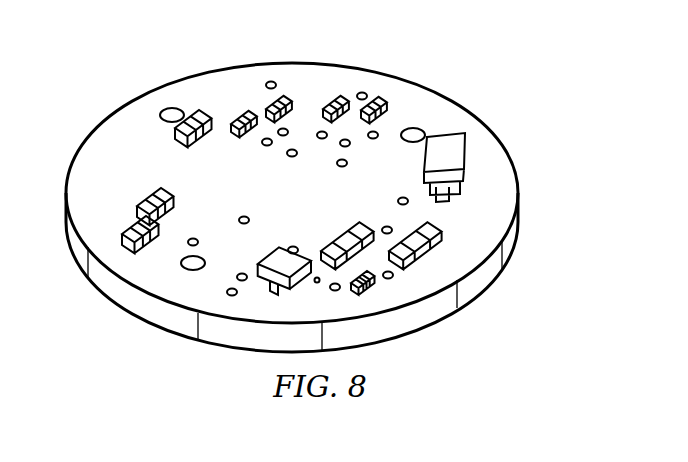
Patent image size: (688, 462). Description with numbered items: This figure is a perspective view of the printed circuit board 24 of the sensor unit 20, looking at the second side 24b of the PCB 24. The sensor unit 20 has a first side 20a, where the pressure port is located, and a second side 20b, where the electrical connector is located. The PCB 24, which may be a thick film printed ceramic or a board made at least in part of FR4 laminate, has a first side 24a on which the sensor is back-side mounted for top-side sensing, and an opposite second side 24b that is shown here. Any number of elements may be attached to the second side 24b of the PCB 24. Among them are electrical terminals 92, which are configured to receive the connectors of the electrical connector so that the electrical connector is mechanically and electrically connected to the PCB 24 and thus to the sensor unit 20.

The sensor unit 20 is at (323, 207).
The first side of the sensor unit 20a is at (296, 306).
The second side of the sensor unit 20b is at (323, 173).
The printed circuit board 24 is at (482, 278).
The first side of the PCB 24a is at (247, 350).
The second side of the PCB 24b is at (305, 62).
The electrical terminals 92 is at (170, 108).